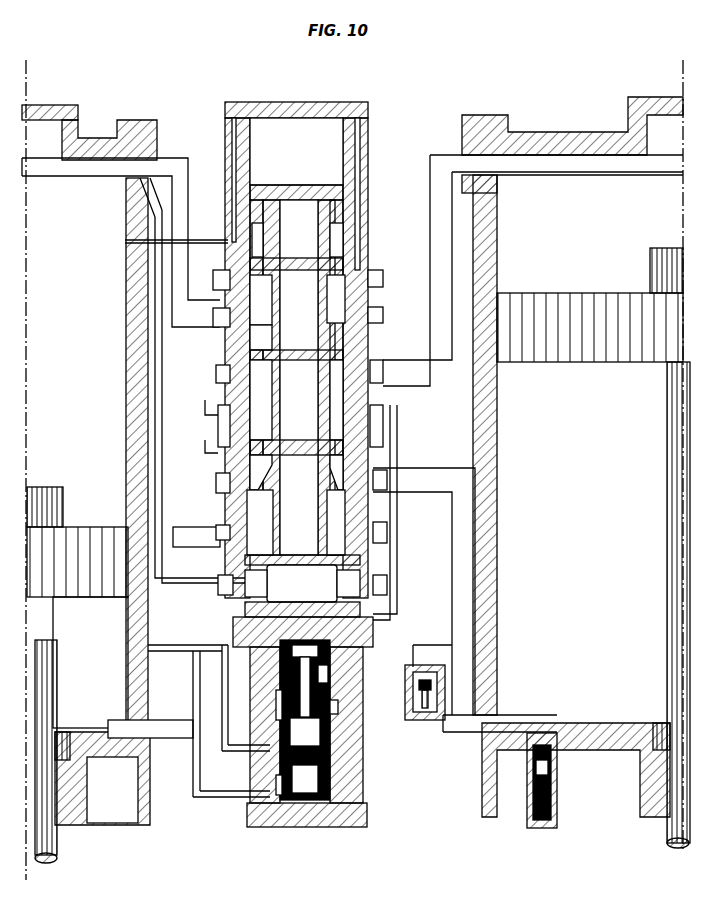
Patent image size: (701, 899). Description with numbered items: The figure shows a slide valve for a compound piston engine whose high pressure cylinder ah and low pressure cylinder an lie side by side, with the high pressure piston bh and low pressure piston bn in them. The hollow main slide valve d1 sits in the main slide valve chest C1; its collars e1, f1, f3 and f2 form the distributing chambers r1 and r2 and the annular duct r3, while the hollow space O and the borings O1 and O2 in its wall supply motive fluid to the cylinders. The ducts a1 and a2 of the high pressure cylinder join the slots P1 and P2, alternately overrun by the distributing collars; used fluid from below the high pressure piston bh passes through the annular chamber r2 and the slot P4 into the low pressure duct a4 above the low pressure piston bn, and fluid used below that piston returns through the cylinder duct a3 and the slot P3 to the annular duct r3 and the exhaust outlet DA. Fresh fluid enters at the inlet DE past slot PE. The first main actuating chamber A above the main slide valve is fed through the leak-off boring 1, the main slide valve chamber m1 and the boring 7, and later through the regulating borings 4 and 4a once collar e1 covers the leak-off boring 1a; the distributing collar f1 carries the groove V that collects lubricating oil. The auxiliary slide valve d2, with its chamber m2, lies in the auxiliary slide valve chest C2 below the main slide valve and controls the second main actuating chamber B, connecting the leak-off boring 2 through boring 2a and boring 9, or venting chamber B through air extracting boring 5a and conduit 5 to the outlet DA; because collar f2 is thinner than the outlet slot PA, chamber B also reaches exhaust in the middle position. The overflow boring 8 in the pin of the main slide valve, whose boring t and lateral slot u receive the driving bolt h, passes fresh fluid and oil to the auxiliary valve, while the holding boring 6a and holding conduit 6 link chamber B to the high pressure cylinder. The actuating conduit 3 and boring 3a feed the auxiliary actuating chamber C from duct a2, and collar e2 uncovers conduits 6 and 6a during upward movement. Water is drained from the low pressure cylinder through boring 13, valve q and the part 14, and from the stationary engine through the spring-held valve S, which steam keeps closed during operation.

The duct a1 is at (178, 163).
The leak-off boring 1a is at (236, 180).
The leak-off boring 1 is at (205, 241).
The first main actuating chamber A is at (318, 137).
The main slide valve chest C1 is at (362, 172).
The boring 7 is at (262, 208).
The fresh motive fluid regulating boring 4a is at (350, 222).
The main slide valve chamber m1 is at (338, 241).
The fresh motive fluid regulating boring 4 is at (357, 237).
The collar e1 is at (338, 264).
The motive fluid inlet DE is at (385, 272).
The slot PE is at (242, 280).
The boring O1 is at (328, 310).
The distributing chamber r1 is at (261, 300).
The groove V is at (270, 348).
The slot P1 is at (240, 322).
The distributing collar f1 is at (340, 357).
The slot P3 is at (240, 375).
The annular duct r3 is at (296, 400).
The hollow space O is at (299, 377).
The outlet DA is at (210, 430).
The collar f3 is at (342, 452).
The outlet slot PA is at (240, 433).
The slot P4 is at (240, 487).
The main slide valve d1 is at (323, 497).
The slot P2 is at (240, 525).
The distributing chamber r2 is at (296, 522).
The air extracting conduit 5 is at (397, 530).
The low pressure cylinder an is at (497, 485).
The high pressure cylinder ah is at (135, 383).
The high pressure piston bh is at (97, 537).
The low pressure piston bn is at (558, 355).
The cylinder duct a3 is at (448, 163).
The low pressure cylinder duct a4 is at (466, 725).
The boring 13 is at (428, 650).
The valve q is at (427, 715).
The valve 14 is at (433, 712).
The valve S is at (558, 792).
The motive fluid holding boring 6a is at (245, 566).
The boring O2 is at (268, 585).
The collar e2 is at (322, 600).
The overflow boring 8 is at (245, 610).
The leak-off boring 2 is at (205, 645).
The distributing collar f2 is at (330, 558).
The second main actuating chamber B is at (365, 618).
The boring t is at (310, 635).
The driving bolt h is at (312, 652).
The lateral slot u is at (320, 672).
The boring 9 is at (277, 700).
The boring 2a is at (270, 735).
The air extracting boring 5a is at (340, 708).
The chamber m2 is at (322, 735).
The auxiliary slide valve d2 is at (320, 768).
The boring 3a is at (276, 780).
The actuating conduit 3 is at (195, 793).
The auxiliary slide valve chest C2 is at (332, 792).
The auxiliary actuating chamber C is at (328, 827).
The duct a2 is at (172, 740).
The holding conduit 6 is at (160, 355).